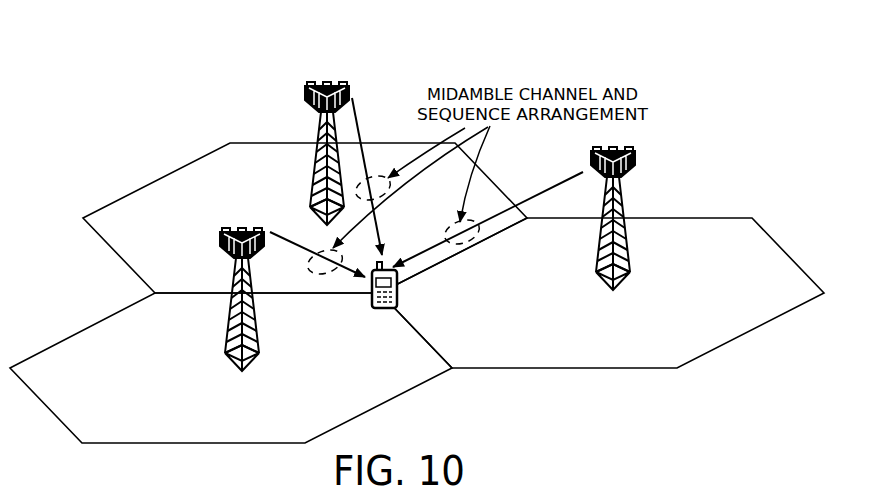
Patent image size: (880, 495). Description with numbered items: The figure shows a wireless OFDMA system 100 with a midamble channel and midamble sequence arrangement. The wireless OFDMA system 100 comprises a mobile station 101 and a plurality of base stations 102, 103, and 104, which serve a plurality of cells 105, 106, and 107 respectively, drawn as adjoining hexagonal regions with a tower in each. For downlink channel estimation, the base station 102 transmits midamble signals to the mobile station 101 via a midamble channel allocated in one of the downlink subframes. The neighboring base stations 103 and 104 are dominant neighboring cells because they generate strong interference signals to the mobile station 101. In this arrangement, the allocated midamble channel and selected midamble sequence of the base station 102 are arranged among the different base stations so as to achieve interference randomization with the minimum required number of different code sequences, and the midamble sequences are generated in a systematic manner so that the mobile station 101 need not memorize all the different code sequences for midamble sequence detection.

The wireless OFDMA system 100 is at (716, 70).
The mobile station MS 101 is at (386, 310).
The base station BS 102 is at (612, 296).
The base station BS 103 is at (322, 79).
The base station BS 104 is at (238, 229).
The cell 105 is at (794, 300).
The cell 106 is at (142, 229).
The cell 107 is at (72, 379).